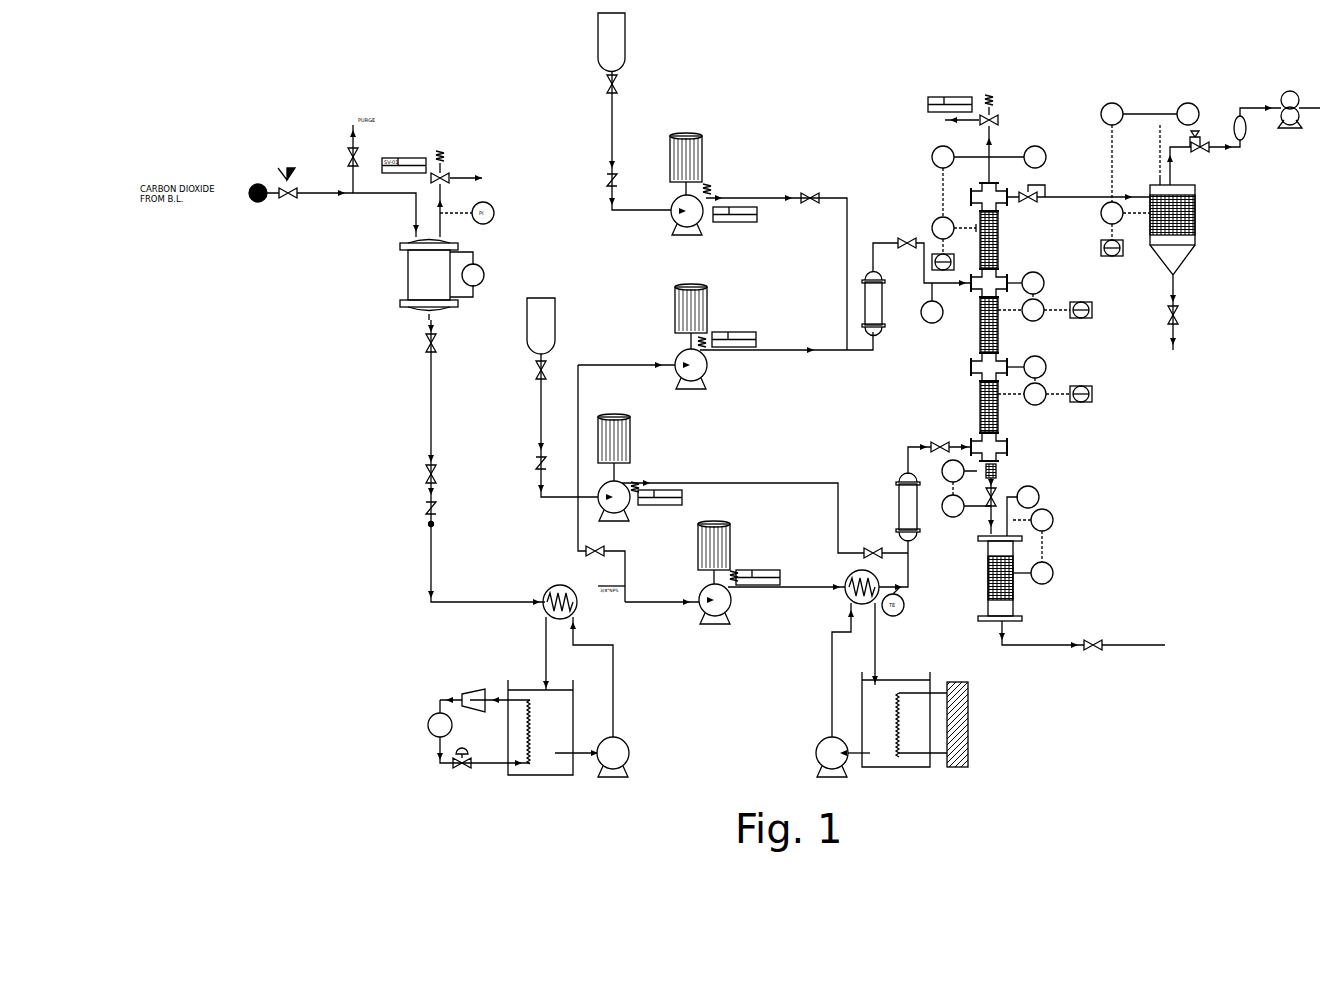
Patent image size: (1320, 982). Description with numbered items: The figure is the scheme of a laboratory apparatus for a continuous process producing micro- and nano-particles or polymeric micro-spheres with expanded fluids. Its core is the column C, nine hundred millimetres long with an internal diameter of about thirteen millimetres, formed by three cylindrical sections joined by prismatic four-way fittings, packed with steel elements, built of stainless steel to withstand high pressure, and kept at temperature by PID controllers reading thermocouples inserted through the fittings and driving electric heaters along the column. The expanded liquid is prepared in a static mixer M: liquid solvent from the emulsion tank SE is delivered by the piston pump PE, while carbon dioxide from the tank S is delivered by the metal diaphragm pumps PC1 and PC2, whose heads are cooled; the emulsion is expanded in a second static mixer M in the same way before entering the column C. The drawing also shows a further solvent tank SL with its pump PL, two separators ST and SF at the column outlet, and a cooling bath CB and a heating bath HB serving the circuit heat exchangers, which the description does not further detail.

The tank S is at (432, 280).
The emulsion tank SE is at (634, 111).
The liquid solvent tank SL is at (562, 397).
The piston pump PE is at (758, 241).
The metal diaphragm pump PC2 is at (725, 336).
The liquid pump PL is at (753, 486).
The metal diaphragm pump PC1 is at (735, 572).
The static mixer M is at (917, 414).
The column C is at (1039, 314).
The top separator ST is at (1210, 220).
The bottom separator SF is at (1060, 568).
The cooling bath CB is at (528, 681).
The heating bath HB is at (926, 673).